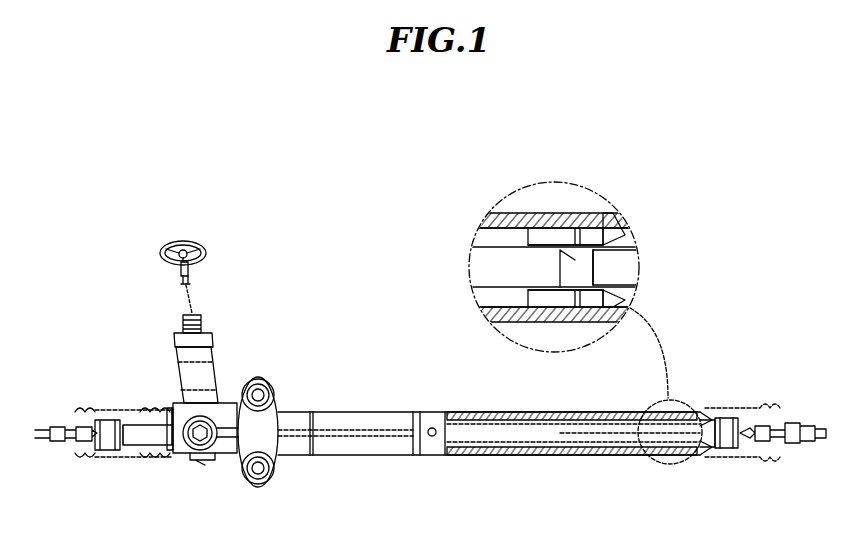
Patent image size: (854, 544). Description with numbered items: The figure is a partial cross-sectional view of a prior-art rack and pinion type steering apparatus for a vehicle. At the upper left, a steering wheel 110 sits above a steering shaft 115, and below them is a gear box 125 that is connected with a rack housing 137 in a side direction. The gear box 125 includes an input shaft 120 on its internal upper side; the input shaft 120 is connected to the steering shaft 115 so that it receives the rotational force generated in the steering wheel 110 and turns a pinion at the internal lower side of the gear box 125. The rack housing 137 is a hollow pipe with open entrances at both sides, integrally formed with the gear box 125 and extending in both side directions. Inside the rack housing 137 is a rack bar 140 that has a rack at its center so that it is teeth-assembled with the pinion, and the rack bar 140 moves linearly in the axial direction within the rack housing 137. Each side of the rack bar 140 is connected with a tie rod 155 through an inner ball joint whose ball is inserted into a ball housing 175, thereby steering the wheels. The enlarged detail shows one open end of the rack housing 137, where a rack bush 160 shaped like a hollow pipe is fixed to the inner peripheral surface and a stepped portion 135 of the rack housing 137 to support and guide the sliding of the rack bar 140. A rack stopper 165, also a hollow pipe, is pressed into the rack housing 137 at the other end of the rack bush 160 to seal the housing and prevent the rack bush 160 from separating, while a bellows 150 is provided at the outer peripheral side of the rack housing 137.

The steering wheel 110 is at (196, 246).
The steering shaft 115 is at (185, 289).
The input shaft 120 is at (201, 316).
The gear box 125 is at (236, 343).
The stepped portion 135 is at (530, 212).
The rack housing 137 is at (431, 457).
The rack bar 140 is at (505, 450).
The bellows 150 is at (702, 412).
The tie rod 155 is at (797, 425).
The rack bush 160 is at (615, 255).
The rack stopper 165 is at (615, 232).
The ball housing 175 is at (727, 450).